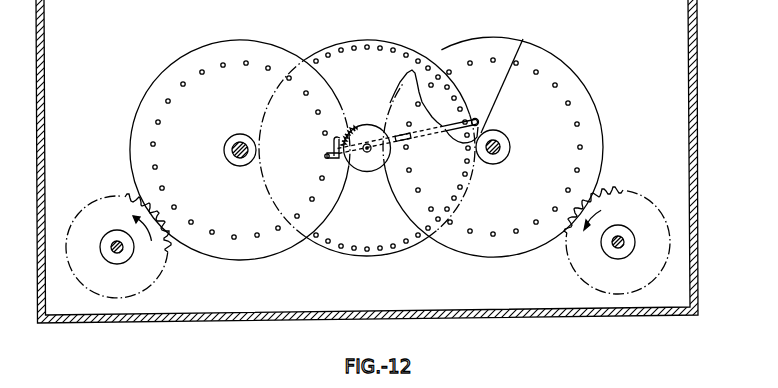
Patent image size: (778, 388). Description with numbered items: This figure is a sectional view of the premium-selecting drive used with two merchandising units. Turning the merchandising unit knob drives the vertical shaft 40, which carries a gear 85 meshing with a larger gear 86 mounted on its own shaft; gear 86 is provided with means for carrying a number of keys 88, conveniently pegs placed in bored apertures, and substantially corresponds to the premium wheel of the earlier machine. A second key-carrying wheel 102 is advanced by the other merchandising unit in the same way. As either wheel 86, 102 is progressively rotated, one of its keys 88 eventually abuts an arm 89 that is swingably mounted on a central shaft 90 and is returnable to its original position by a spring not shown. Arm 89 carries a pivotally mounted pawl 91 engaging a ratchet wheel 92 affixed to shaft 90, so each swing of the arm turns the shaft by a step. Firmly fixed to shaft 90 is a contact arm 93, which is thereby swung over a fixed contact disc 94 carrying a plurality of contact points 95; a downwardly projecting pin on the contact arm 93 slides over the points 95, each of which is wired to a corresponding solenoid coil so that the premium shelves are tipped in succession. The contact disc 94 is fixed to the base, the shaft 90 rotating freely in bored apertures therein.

The key-carrying wheel 102 is at (137, 147).
The gear 86 is at (593, 152).
The gear 85 is at (580, 267).
The vertical shaft 40 is at (618, 247).
The ratchet wheel 92 is at (368, 171).
The shaft 90 is at (367, 143).
The key 88 is at (328, 159).
The pawl 91 is at (334, 140).
The arm 89 is at (408, 139).
The contact arm 93 is at (477, 117).
The contact disc 94 is at (388, 67).
The contact points 95 is at (441, 76).